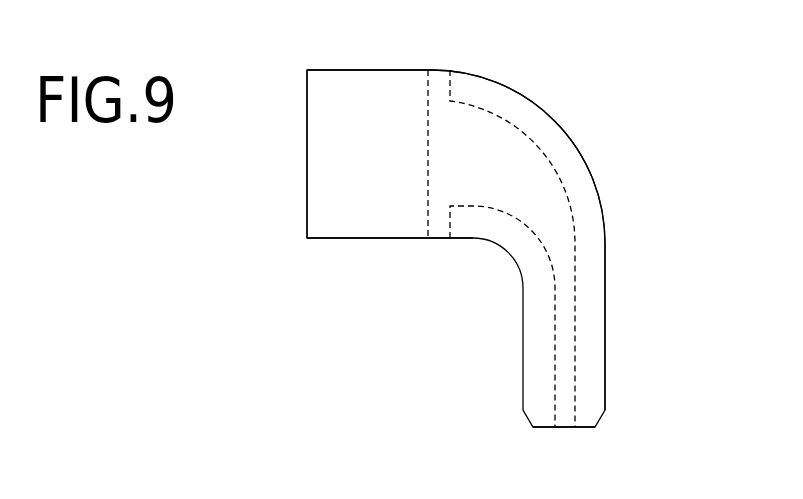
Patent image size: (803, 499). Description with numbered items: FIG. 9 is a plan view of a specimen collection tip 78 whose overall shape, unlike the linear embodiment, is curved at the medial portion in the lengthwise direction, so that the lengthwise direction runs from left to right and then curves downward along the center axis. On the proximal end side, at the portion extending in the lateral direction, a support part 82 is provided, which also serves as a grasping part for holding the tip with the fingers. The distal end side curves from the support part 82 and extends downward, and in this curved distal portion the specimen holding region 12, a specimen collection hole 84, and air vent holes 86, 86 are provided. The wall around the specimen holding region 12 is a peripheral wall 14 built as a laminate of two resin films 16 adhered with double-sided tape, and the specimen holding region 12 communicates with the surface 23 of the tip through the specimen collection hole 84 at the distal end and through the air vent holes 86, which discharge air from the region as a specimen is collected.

The inside region 12 is at (506, 124).
The peripheral wall 14 is at (625, 256).
The resin film 16 is at (325, 150).
The surface 23 is at (378, 224).
The specimen collection tip 78 is at (616, 78).
The support part 82 is at (338, 62).
The specimen collection hole 84 is at (556, 428).
The air vent hole 86 is at (432, 69).